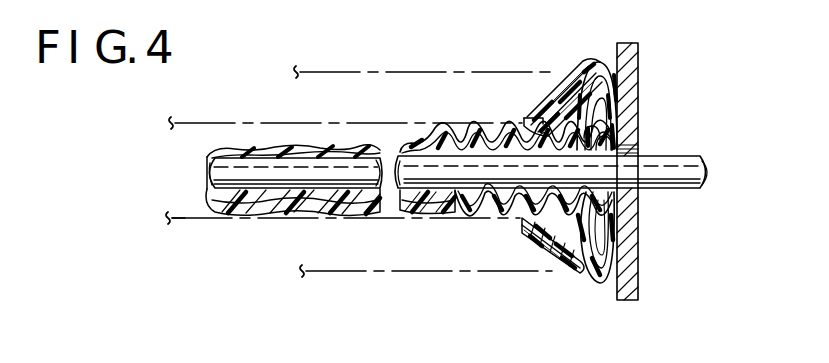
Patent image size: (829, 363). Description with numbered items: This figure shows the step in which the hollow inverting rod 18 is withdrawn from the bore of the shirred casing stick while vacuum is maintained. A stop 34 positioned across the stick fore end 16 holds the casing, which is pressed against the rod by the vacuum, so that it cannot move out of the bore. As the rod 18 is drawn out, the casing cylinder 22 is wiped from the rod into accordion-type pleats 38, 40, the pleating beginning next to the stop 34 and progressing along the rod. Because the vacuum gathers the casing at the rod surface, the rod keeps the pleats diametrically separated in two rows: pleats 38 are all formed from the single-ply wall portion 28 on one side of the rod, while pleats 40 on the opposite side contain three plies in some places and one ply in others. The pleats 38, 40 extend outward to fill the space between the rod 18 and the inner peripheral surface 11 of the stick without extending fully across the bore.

The inner peripheral surface 11 is at (184, 218).
The fore end 16 is at (576, 78).
The hollow inverting rod 18 is at (672, 150).
The cylinder 22 is at (288, 118).
The portion of the cylinder wall 28 is at (350, 148).
The stop 34 is at (638, 72).
The pleats 38 is at (500, 128).
The pleats 40 is at (514, 214).